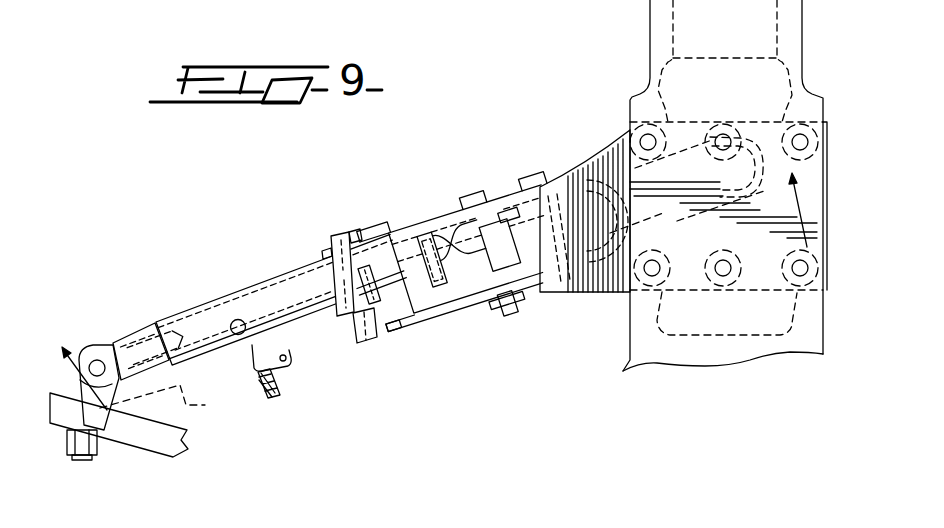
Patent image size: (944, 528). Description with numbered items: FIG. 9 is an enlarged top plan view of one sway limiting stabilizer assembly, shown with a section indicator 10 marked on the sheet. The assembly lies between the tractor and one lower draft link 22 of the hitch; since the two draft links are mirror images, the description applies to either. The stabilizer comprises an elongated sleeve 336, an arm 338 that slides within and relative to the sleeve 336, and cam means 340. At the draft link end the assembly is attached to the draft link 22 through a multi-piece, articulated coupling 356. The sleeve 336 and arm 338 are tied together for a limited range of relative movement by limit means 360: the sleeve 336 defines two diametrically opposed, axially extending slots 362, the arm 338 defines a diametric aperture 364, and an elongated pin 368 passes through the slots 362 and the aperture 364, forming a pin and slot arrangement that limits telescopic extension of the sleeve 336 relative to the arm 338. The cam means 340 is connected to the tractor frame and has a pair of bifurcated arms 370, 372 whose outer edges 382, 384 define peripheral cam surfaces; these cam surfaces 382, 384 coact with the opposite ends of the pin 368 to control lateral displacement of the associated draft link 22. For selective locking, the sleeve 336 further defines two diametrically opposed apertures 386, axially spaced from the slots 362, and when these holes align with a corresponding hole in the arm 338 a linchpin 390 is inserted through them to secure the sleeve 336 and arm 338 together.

The section line 10- 10 is at (435, 291).
The lower draft link 22 is at (150, 433).
The elongated sleeve 336 is at (200, 327).
The arm 338 is at (128, 335).
The cam means 340 is at (407, 217).
The multi-piece articulated coupling 356 is at (85, 350).
The limit means 360 is at (336, 238).
The axially extending slots 362 is at (297, 283).
The diametric aperture 364 is at (368, 350).
The elongated pin 368 is at (327, 254).
The bifurcated arm 370 is at (381, 224).
The bifurcated arm 372 is at (443, 312).
The outer edge cam surface 382 is at (353, 232).
The outer edge cam surface 384 is at (386, 334).
The apertures 386 is at (238, 335).
The linchpin 390 is at (263, 388).